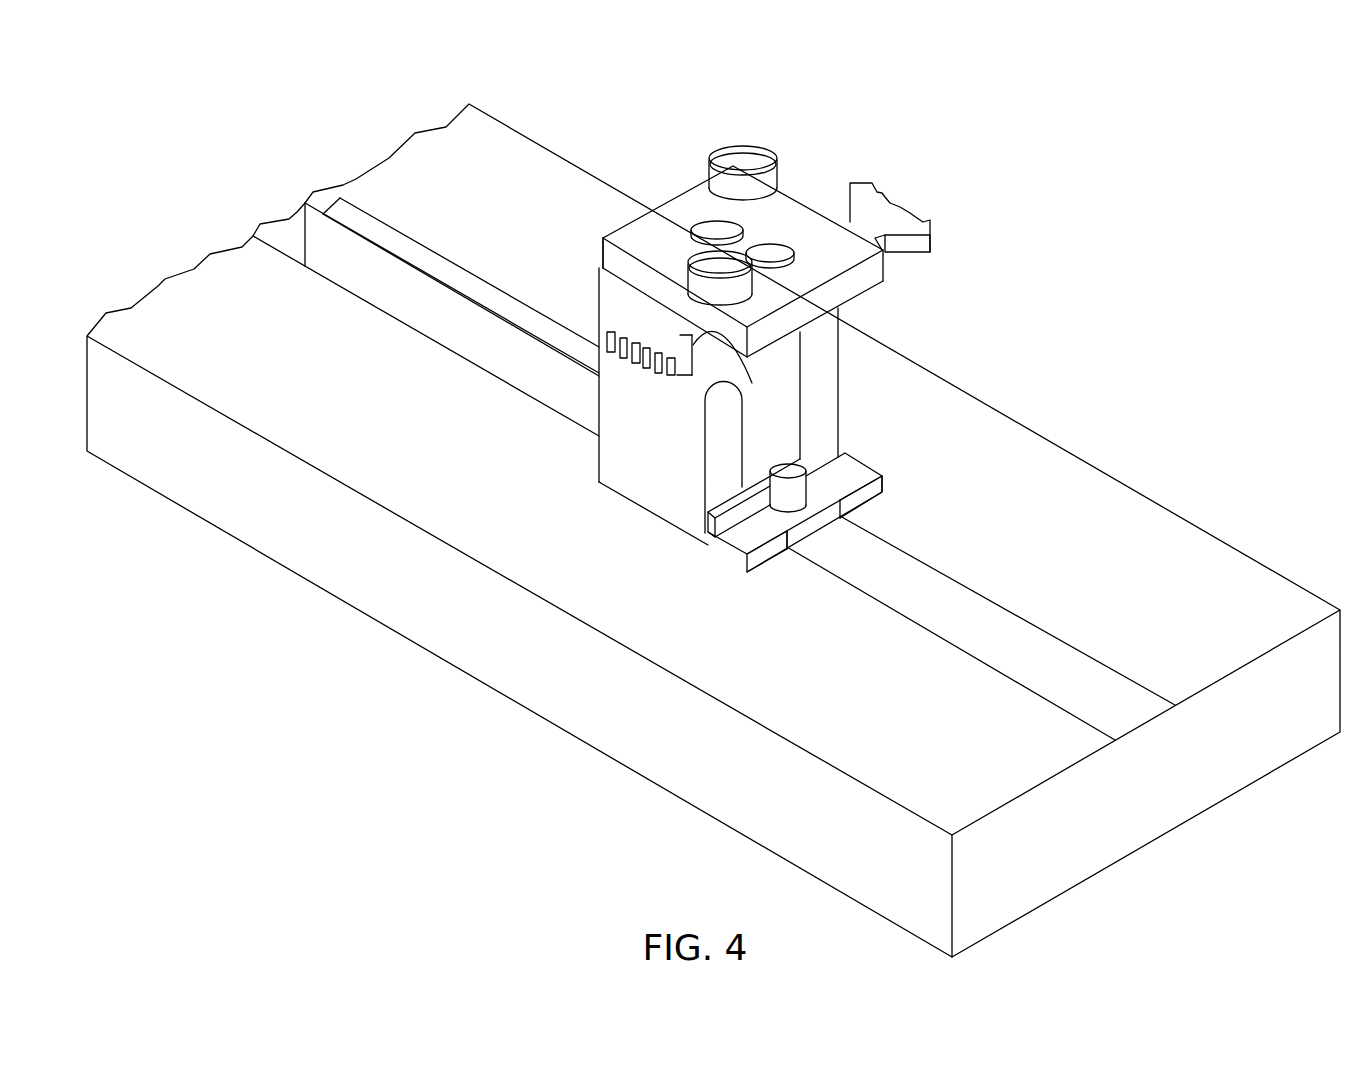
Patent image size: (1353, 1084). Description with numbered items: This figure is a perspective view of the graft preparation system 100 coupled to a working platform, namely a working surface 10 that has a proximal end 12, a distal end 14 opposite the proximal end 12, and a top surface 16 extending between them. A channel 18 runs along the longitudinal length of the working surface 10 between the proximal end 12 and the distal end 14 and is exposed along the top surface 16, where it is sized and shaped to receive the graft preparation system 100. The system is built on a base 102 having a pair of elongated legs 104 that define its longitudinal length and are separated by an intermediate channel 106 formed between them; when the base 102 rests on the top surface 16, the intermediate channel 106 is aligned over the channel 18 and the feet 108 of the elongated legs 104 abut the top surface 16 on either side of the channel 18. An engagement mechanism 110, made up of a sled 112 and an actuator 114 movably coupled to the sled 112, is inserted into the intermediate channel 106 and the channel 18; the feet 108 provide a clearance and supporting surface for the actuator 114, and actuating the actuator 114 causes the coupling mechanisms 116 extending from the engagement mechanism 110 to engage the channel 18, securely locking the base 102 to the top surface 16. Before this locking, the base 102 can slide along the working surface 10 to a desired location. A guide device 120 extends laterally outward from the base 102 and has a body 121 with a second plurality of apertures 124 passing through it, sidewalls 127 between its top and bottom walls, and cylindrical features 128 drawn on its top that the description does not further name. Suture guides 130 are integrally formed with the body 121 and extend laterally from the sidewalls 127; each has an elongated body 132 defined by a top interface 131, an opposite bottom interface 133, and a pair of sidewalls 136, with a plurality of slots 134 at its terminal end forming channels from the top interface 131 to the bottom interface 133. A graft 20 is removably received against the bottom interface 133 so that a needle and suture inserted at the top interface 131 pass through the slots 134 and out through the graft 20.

The working surface 10 is at (90, 578).
The proximal end 12 is at (1173, 820).
The distal end 14 is at (149, 194).
The top surface 16 is at (1195, 540).
The channel 18 is at (1010, 627).
The graft 20 is at (452, 238).
The graft preparation system 100 is at (1163, 157).
The base 102 is at (602, 406).
The elongated legs 104 is at (818, 418).
The intermediate channel 106 is at (850, 379).
The feet 108 is at (877, 474).
The engagement mechanism 110 is at (795, 546).
The sled 112 is at (800, 462).
The actuator 114 is at (708, 522).
The coupling mechanisms 116 is at (768, 250).
The guide device 120 is at (759, 196).
The body 121 is at (846, 263).
The second plurality of apertures 124 is at (705, 145).
The sidewalls 127 is at (605, 248).
The pad 128 is at (747, 150).
The suture guides 130 is at (743, 240).
The top interface 131 is at (680, 303).
The elongated body 132 is at (682, 223).
The bottom interface 133 is at (705, 364).
The slots 134 is at (618, 355).
The sidewalls 136 is at (735, 350).